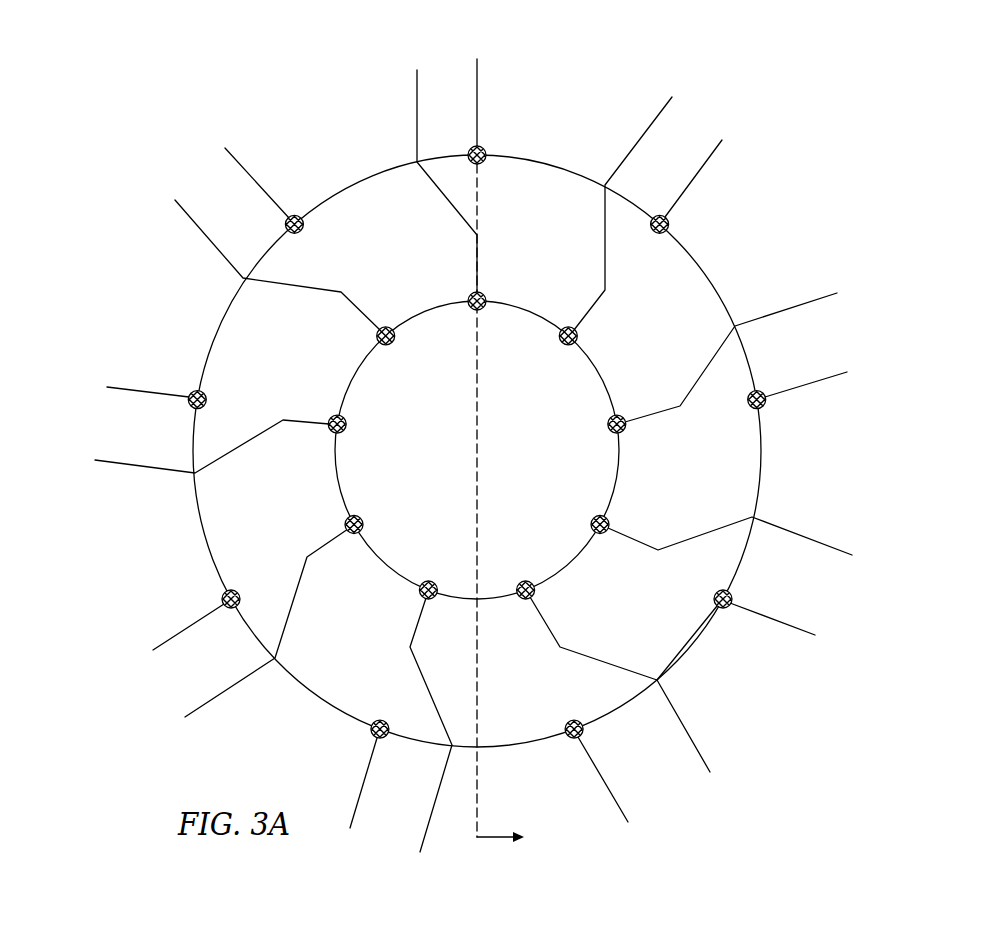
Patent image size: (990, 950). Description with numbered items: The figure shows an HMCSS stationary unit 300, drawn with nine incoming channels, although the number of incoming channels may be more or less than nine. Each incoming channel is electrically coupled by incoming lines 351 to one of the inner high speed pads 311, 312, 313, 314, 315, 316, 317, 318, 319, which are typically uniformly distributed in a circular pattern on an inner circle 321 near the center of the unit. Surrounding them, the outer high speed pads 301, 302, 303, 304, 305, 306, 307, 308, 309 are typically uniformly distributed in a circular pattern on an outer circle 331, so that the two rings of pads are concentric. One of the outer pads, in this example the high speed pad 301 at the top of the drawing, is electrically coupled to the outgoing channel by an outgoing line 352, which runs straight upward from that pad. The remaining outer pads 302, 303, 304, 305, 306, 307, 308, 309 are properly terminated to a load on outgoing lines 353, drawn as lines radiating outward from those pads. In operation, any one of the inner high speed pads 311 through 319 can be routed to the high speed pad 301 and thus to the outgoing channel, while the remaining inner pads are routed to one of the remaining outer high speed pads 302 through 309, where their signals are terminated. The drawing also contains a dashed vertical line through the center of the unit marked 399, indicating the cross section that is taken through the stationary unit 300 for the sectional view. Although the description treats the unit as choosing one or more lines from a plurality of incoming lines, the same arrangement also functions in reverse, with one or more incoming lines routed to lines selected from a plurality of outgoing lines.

The HMCSS stationary unit 300 is at (795, 142).
The high speed pad 301 is at (482, 147).
The high speed pad 302 is at (304, 227).
The high speed pad 303 is at (191, 392).
The high speed pad 304 is at (223, 595).
The high speed pad 305 is at (371, 736).
The high speed pad 306 is at (569, 721).
The high speed pad 307 is at (714, 604).
The high speed pad 308 is at (764, 405).
The high speed pad 309 is at (669, 227).
The high speed pad 311 is at (484, 295).
The high speed pad 312 is at (376, 337).
The high speed pad 313 is at (331, 418).
The high speed pad 314 is at (346, 524).
The high speed pad 315 is at (421, 593).
The high speed pad 316 is at (534, 590).
The high speed pad 317 is at (608, 524).
The high speed pad 318 is at (625, 427).
The high speed pad 319 is at (577, 337).
The inner circle 321 is at (585, 371).
The outer circle 331 is at (570, 180).
The incoming lines 351 is at (417, 95).
The outgoing line 352 is at (475, 92).
The outgoing lines 353 is at (800, 630).
The cross section 399 is at (477, 59).